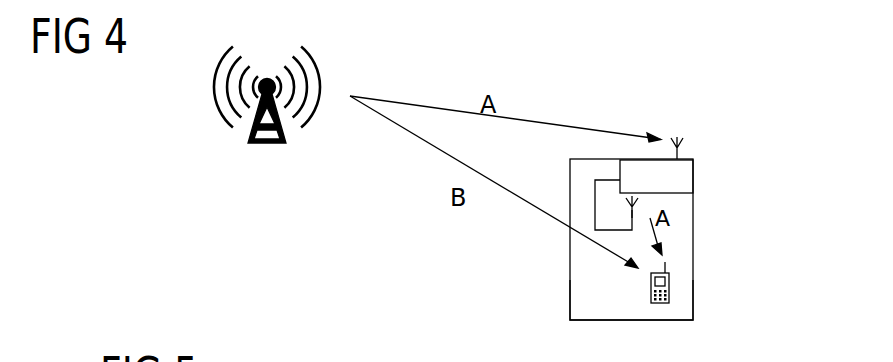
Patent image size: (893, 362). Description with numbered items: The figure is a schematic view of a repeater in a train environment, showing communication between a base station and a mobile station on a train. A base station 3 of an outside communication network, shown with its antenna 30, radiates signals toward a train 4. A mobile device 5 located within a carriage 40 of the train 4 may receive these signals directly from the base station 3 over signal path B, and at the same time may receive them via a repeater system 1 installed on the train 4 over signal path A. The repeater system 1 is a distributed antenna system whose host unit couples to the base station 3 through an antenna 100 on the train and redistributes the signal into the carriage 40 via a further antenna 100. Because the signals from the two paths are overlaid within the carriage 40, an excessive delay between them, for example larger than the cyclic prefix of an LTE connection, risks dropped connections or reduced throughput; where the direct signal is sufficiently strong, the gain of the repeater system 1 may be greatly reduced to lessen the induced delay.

The base station 3 is at (263, 146).
The antenna of base station 30 is at (271, 80).
The antenna 100 is at (676, 137).
The repeater system 1 is at (695, 157).
The train 4 is at (697, 212).
The carriage 40 is at (696, 268).
The mobile device 5 is at (663, 304).